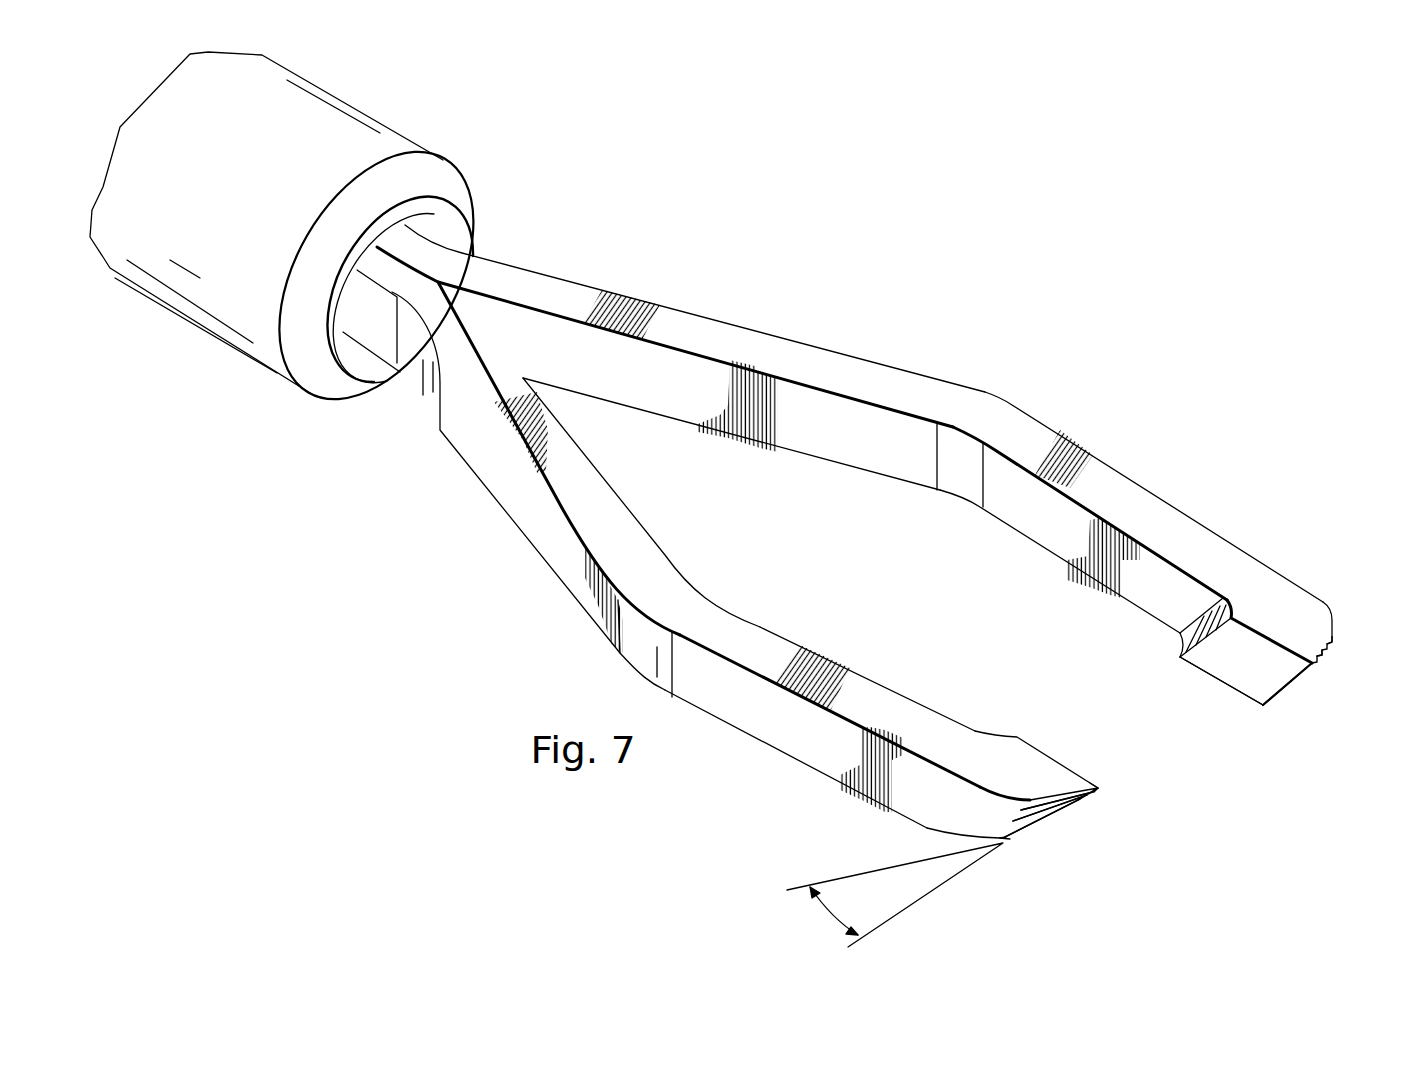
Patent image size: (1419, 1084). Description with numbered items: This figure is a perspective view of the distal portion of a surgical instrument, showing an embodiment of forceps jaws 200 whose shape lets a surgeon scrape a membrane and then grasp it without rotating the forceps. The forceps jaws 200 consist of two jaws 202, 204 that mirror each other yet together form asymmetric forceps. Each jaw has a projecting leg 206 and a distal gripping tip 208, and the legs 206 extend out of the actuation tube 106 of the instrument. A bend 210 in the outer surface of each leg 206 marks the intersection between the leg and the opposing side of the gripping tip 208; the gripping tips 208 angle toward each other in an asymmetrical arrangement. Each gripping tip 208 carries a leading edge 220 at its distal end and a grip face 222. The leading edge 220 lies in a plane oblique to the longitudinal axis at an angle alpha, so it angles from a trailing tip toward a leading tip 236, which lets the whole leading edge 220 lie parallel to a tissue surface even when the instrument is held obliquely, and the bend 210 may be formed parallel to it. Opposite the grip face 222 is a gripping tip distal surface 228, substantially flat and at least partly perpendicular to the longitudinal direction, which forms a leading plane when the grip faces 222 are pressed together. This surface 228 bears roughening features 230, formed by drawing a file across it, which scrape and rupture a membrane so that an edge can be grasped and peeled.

The actuation tube 106 is at (347, 110).
The forceps jaws 200 is at (940, 262).
The jaw 202 is at (752, 317).
The jaw 204 is at (520, 553).
The projecting leg 206 is at (1140, 480).
The distal gripping tip 208 is at (1099, 742).
The bend 210 is at (1330, 607).
The leading edge 220 is at (1287, 690).
The grip face 222 is at (1233, 673).
The gripping tip distal surface 228 is at (1320, 662).
The roughening features 230 is at (1333, 638).
The leading tip 236 is at (1103, 785).